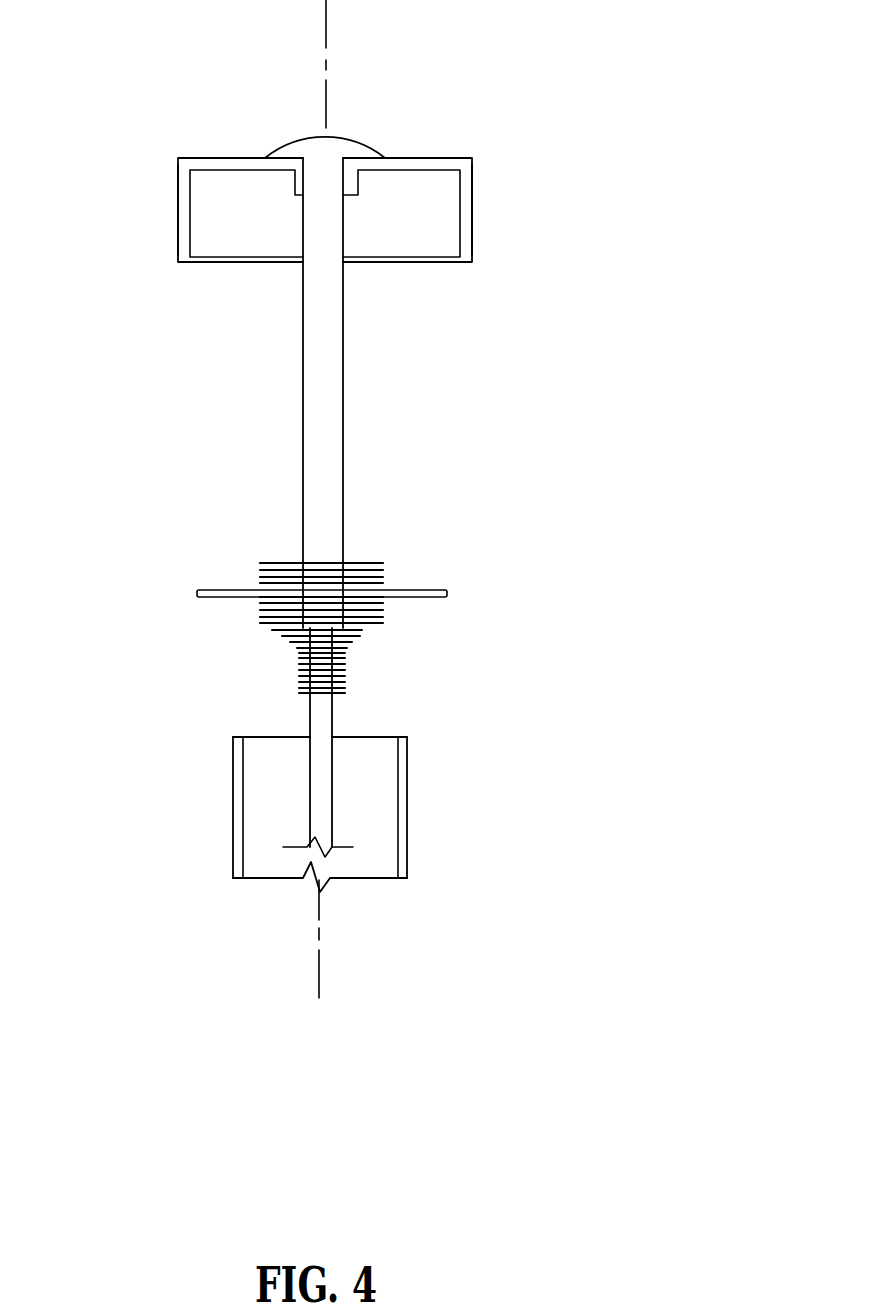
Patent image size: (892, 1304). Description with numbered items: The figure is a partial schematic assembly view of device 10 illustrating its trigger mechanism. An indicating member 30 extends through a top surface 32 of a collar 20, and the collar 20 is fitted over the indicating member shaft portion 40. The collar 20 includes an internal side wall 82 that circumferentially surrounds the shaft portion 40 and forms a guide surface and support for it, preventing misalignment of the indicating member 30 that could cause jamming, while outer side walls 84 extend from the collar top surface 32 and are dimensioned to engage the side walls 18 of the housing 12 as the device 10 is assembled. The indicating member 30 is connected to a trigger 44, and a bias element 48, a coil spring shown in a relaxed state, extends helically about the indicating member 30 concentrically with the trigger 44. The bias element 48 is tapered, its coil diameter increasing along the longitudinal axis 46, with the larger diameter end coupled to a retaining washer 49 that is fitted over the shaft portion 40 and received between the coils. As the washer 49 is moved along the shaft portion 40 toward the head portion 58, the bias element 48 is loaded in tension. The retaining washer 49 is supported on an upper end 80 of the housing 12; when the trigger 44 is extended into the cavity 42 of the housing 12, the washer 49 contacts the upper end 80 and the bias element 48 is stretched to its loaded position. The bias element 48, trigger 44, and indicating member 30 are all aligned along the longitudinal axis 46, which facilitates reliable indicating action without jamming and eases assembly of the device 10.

The device 10 is at (585, 68).
The housing 12 is at (430, 801).
The side walls 18 is at (410, 752).
The collar 20 is at (459, 145).
The indicating member 30 is at (354, 364).
The top surface 32 is at (223, 158).
The shaft portion 40 is at (315, 400).
The cavity 42 is at (363, 863).
The trigger 44 is at (322, 707).
The longitudinal axis 46 is at (317, 970).
The bias element 48 is at (372, 644).
The retaining washer 49 is at (437, 590).
The head portion 58 is at (348, 135).
The upper end 80 is at (390, 737).
The internal side wall 82 is at (288, 182).
The outer side walls 84 is at (178, 232).